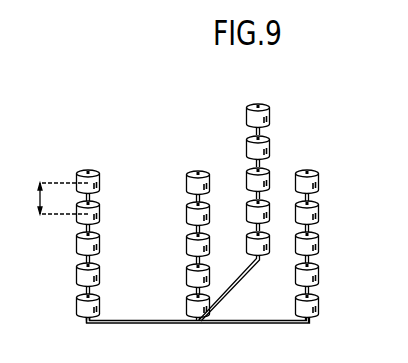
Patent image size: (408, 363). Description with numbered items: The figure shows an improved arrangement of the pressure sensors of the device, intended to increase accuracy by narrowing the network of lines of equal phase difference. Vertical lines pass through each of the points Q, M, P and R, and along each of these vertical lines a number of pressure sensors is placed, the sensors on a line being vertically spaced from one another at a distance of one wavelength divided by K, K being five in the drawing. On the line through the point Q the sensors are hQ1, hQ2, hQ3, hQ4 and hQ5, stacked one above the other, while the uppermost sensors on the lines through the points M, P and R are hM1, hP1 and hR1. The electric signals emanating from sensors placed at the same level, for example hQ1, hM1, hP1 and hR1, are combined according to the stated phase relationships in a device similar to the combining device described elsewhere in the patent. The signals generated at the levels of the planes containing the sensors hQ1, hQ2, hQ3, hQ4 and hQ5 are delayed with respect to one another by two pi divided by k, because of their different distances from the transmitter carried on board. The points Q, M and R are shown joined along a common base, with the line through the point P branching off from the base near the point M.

The pressure sensor hQ1 is at (95, 175).
The pressure sensor hQ2 is at (100, 211).
The pressure sensor hQ3 is at (100, 245).
The pressure sensor hQ4 is at (98, 282).
The pressure sensor hQ5 is at (97, 313).
The pressure sensor hM1 is at (207, 173).
The pressure sensor hP1 is at (262, 108).
The pressure sensor hR1 is at (316, 175).
The point Q is at (82, 335).
The point M is at (195, 336).
The point P is at (239, 289).
The point R is at (303, 336).